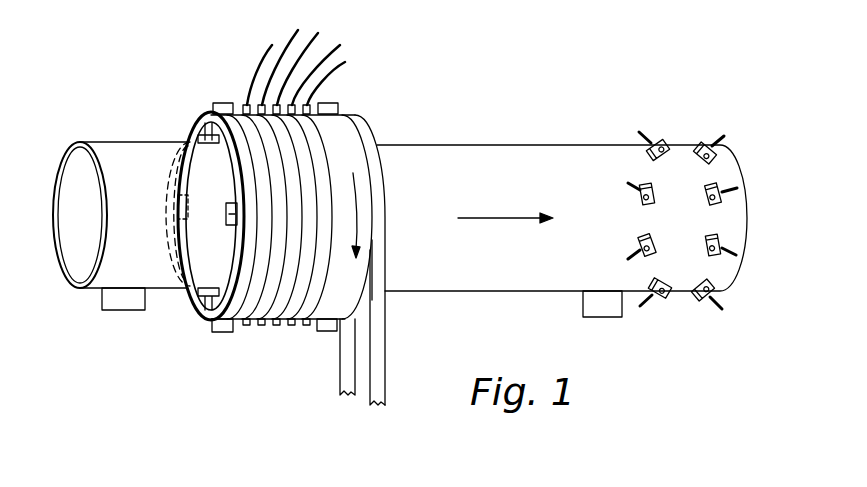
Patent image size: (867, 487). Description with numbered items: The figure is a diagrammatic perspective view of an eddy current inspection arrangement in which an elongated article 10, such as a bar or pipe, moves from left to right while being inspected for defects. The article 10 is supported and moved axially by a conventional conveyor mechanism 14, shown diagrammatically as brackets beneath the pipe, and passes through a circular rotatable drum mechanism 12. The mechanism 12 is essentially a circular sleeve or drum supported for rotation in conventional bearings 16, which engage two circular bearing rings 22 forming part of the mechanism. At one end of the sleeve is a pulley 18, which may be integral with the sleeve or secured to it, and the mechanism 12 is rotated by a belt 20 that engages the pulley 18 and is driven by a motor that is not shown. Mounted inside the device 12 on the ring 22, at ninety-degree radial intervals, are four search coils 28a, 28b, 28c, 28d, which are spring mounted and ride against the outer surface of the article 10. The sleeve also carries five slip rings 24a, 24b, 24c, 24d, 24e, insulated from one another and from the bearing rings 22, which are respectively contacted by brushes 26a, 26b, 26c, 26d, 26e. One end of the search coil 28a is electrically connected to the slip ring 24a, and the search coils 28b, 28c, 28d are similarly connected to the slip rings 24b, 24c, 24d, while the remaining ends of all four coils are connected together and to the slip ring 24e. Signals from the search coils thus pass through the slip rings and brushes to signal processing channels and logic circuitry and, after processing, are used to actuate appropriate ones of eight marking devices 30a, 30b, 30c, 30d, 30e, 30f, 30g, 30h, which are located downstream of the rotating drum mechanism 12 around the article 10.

The elongated article 10 is at (445, 144).
The rotatable drum mechanism 12 is at (196, 106).
The conveyor mechanism 14 is at (118, 311).
The bearings 16 is at (216, 103).
The pulley 18 is at (363, 298).
The belt 20 is at (385, 372).
The circular bearing rings 22 is at (208, 321).
The slip ring 24a is at (245, 325).
The slip ring 24b is at (260, 325).
The slip ring 24c is at (275, 325).
The slip ring 24d is at (290, 325).
The slip ring 24e is at (305, 325).
The brush 26a is at (244, 103).
The brush 26b is at (278, 59).
The brush 26c is at (304, 60).
The brush 26d is at (332, 68).
The brush 26e is at (340, 82).
The search coil 28a is at (207, 143).
The search coil 28b is at (224, 216).
The search coil 28c is at (205, 290).
The search coil 28d is at (180, 190).
The marking device 30a is at (698, 143).
The marking device 30b is at (733, 198).
The marking device 30c is at (727, 239).
The marking device 30d is at (717, 284).
The marking device 30e is at (675, 303).
The marking device 30f is at (636, 260).
The marking device 30g is at (638, 206).
The marking device 30h is at (640, 136).